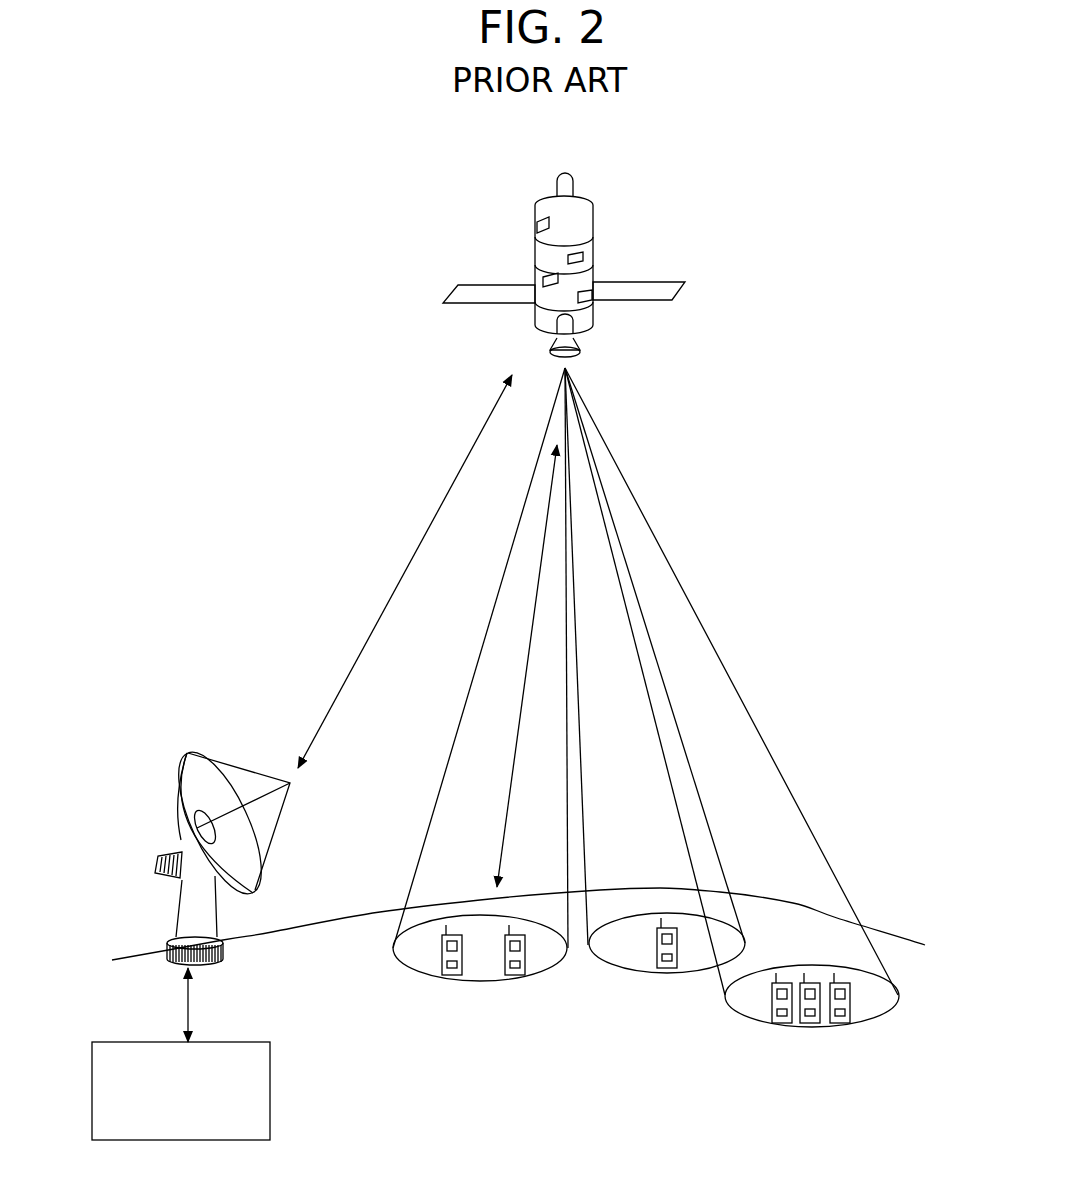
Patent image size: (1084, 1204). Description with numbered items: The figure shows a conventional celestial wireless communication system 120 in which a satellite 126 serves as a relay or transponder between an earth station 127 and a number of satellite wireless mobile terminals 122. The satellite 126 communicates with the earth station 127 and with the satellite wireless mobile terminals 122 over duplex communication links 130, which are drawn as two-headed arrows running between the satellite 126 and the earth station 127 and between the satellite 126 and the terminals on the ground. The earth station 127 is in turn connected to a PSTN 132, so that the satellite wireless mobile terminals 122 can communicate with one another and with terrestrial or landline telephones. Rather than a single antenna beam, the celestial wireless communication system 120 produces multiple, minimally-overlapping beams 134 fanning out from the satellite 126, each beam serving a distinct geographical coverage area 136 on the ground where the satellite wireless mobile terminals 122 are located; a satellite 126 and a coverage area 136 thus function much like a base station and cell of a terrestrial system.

The celestial wireless communication system 120 is at (277, 235).
The satellite wireless mobile terminals 122 is at (445, 960).
The satellite 126 is at (618, 262).
The earth station 127 is at (217, 923).
The duplex communication links 130 is at (407, 568).
The PSTN 132 is at (272, 1067).
The beams 134 is at (462, 720).
The coverage area 136 is at (488, 985).